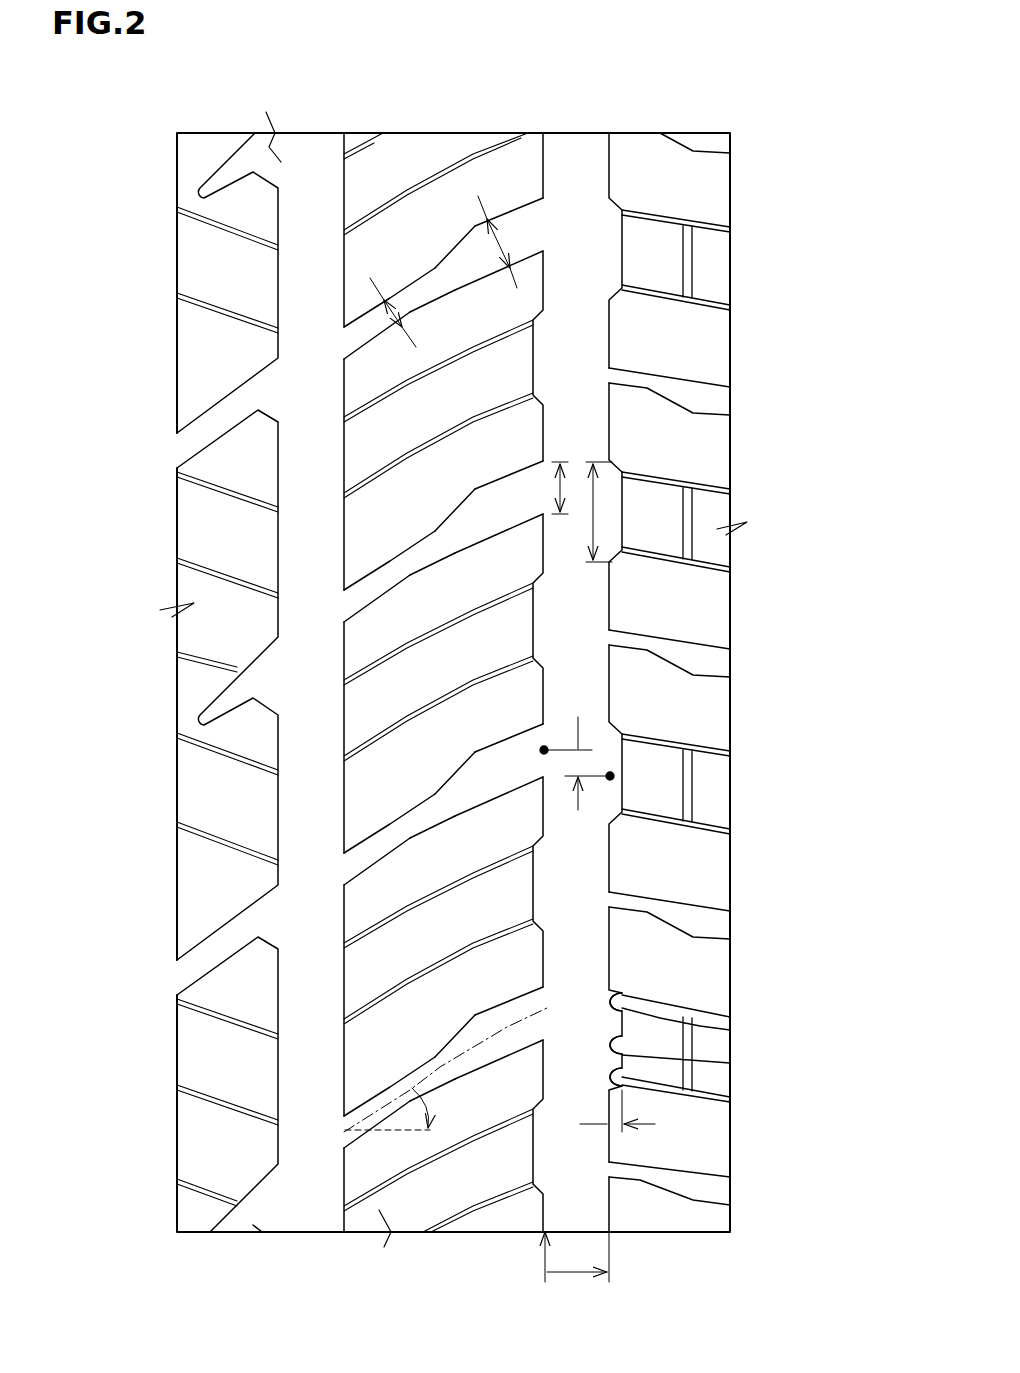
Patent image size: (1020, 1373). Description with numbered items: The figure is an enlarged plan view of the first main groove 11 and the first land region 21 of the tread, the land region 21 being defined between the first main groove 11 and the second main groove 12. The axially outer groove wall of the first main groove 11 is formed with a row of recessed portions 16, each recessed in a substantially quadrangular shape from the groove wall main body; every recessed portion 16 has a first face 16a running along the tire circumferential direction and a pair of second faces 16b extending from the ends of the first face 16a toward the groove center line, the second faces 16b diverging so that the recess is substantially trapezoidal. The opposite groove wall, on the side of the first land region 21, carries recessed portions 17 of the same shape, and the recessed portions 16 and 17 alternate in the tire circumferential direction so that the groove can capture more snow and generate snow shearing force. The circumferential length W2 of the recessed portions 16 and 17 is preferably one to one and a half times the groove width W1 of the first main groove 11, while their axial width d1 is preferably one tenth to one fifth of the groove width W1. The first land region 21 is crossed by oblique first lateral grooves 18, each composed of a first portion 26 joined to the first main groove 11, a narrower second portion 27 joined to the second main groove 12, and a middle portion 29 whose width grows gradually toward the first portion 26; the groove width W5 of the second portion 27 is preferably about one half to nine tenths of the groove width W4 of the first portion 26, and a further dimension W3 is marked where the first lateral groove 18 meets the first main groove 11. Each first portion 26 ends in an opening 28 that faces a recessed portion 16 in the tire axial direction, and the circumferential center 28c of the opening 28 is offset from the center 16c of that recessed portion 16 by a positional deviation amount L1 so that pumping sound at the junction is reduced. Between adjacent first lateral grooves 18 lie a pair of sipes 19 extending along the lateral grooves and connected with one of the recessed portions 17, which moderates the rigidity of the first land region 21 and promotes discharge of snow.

The first main groove 11 is at (582, 150).
The second main groove 12 is at (310, 212).
The recessed portions 16 is at (644, 734).
The first face 16a is at (616, 1045).
The second faces 16b is at (616, 1002).
The center of recessed portion 16c is at (612, 776).
The recessed portions 17 is at (545, 347).
The first lateral grooves 18 is at (295, 605).
The sipes 19 is at (430, 703).
The first land region 21 is at (433, 210).
The first portion 26 is at (505, 495).
The second portion 27 is at (360, 325).
The opening 28 is at (550, 218).
The center of opening 28c is at (547, 748).
The middle portion 29 is at (451, 527).
The groove width W1 is at (577, 1269).
The length of recessed portion W2 is at (594, 565).
The width W3 is at (562, 460).
The groove width of first portion W4 is at (500, 240).
The groove width of second portion W5 is at (380, 300).
The positional deviation amount L1 is at (580, 718).
The width of recessed portion d1 is at (623, 1130).